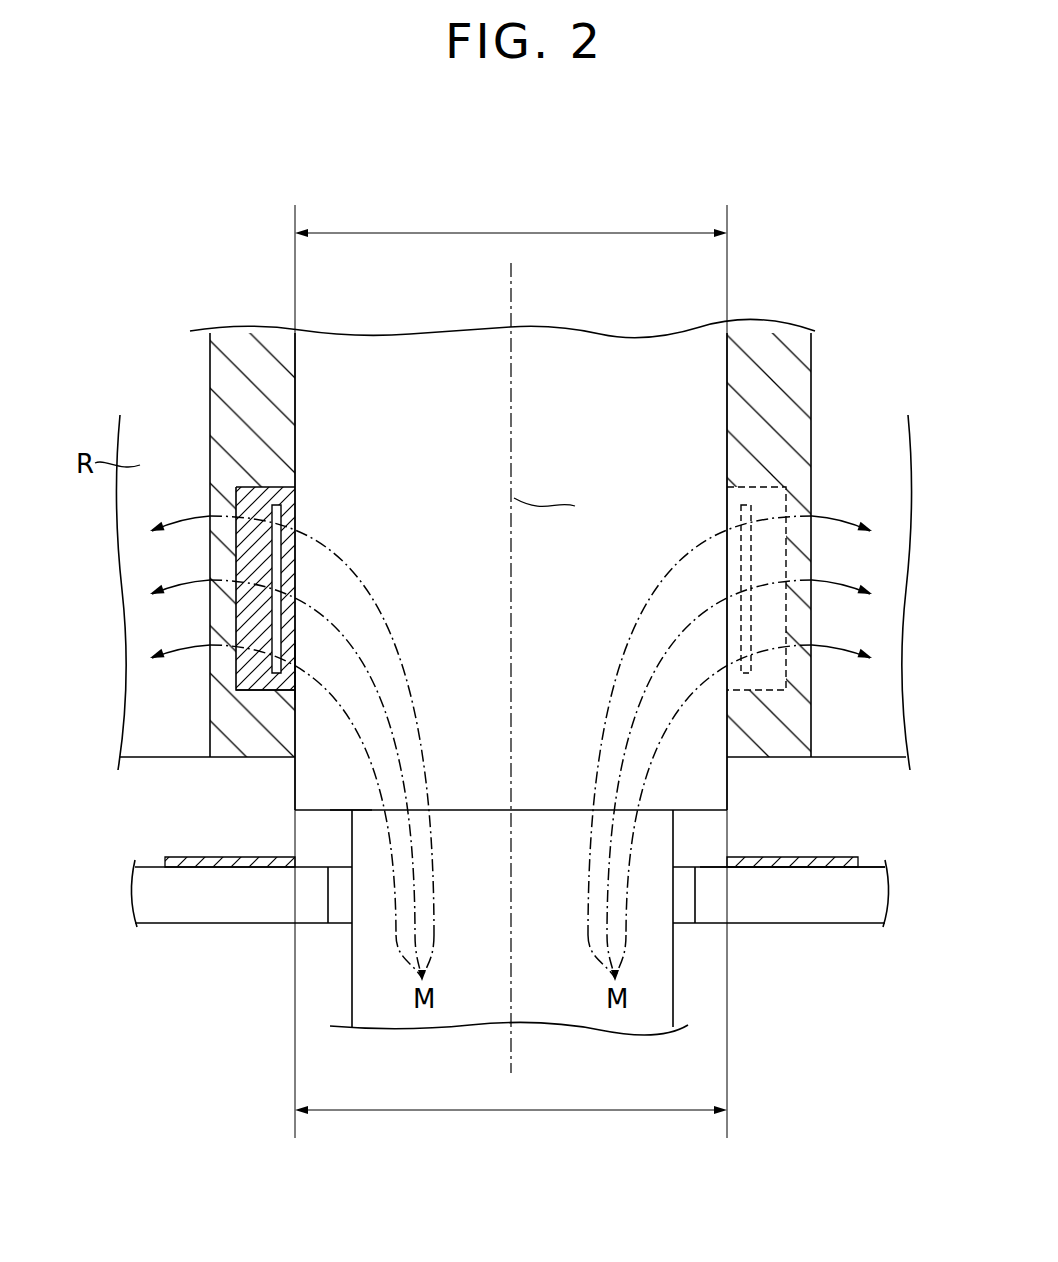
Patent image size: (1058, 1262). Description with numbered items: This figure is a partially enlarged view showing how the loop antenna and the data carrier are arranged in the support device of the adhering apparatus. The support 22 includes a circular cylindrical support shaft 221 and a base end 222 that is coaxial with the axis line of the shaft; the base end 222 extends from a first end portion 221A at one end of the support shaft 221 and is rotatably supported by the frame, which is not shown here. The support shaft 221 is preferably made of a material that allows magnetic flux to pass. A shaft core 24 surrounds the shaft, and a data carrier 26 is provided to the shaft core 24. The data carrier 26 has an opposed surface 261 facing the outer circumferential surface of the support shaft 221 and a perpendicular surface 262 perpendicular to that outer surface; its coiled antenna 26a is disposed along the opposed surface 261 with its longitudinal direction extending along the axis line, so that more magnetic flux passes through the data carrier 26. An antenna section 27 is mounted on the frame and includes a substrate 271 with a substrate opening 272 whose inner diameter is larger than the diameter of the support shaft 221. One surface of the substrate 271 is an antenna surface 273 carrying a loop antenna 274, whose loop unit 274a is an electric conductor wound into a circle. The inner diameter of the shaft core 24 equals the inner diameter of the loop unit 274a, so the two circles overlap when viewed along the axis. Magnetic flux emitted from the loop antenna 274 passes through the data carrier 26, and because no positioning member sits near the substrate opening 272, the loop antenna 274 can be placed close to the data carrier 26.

The support 22 is at (694, 141).
The shaft core 24 is at (760, 346).
The data carrier 26 is at (273, 492).
The coiled antenna 26a is at (277, 553).
The support shaft 221 is at (597, 352).
The first end portion 221A is at (355, 811).
The base end 222 is at (362, 1000).
The opposed surface 261 is at (296, 670).
The perpendicular surface 262 is at (250, 691).
The antenna section 27 is at (525, 911).
The substrate 271 is at (846, 910).
The substrate opening 272 is at (337, 907).
The antenna surface 273 is at (872, 866).
The loop antenna 274 is at (832, 826).
The loop unit 274a is at (783, 857).